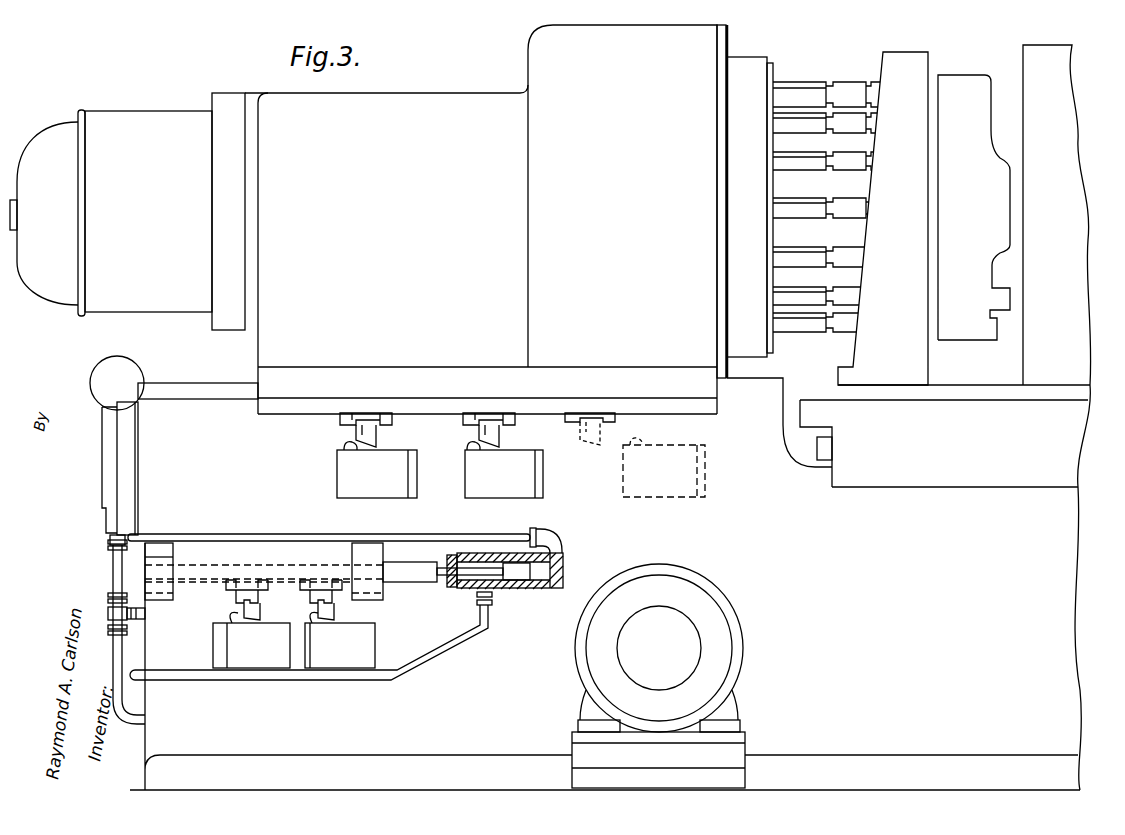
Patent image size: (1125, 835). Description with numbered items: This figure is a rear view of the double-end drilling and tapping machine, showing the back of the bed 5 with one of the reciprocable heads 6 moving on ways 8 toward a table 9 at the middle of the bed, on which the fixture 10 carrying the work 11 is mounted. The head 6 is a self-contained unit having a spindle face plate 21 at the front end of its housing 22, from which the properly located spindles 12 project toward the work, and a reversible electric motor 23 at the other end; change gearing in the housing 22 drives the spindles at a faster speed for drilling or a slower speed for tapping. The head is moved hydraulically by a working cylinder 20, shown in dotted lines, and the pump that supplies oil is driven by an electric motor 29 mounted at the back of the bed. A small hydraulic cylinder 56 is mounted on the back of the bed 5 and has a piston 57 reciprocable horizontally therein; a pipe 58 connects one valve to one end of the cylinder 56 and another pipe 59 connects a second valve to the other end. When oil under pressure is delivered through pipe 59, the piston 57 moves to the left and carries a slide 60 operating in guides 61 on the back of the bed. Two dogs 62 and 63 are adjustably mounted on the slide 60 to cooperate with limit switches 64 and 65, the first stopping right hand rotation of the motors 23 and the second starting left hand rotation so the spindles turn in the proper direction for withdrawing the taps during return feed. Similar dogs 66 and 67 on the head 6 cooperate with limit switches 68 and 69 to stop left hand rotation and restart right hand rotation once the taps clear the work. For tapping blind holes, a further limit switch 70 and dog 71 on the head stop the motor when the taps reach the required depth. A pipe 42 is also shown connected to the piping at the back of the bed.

The bed 5 is at (1068, 630).
The head 6 is at (536, 56).
The ways 8 is at (207, 388).
The table 9 is at (813, 406).
The fixture 10 is at (900, 58).
The work 11 is at (962, 80).
The spindles 12 is at (788, 165).
The working cylinder 20 is at (125, 460).
The spindle face plate 21 is at (730, 50).
The housing 22 is at (418, 98).
The electric motor 23 is at (142, 112).
The electric motor 29 is at (705, 606).
The return pipe 42 is at (125, 698).
The hydraulic cylinder 56 is at (515, 590).
The piston 57 is at (540, 566).
The pipe 58 is at (440, 652).
The pipe 59 is at (495, 532).
The slide 60 is at (410, 576).
The guides 61 is at (173, 558).
The dog 62 is at (336, 612).
The dog 63 is at (243, 613).
The limit switch 64 is at (340, 645).
The limit switch 65 is at (251, 645).
The dog 66 is at (502, 440).
The dog 67 is at (379, 440).
The limit switch 68 is at (505, 490).
The limit switch 69 is at (376, 490).
The limit switch 70 is at (673, 490).
The dog 71 is at (593, 450).